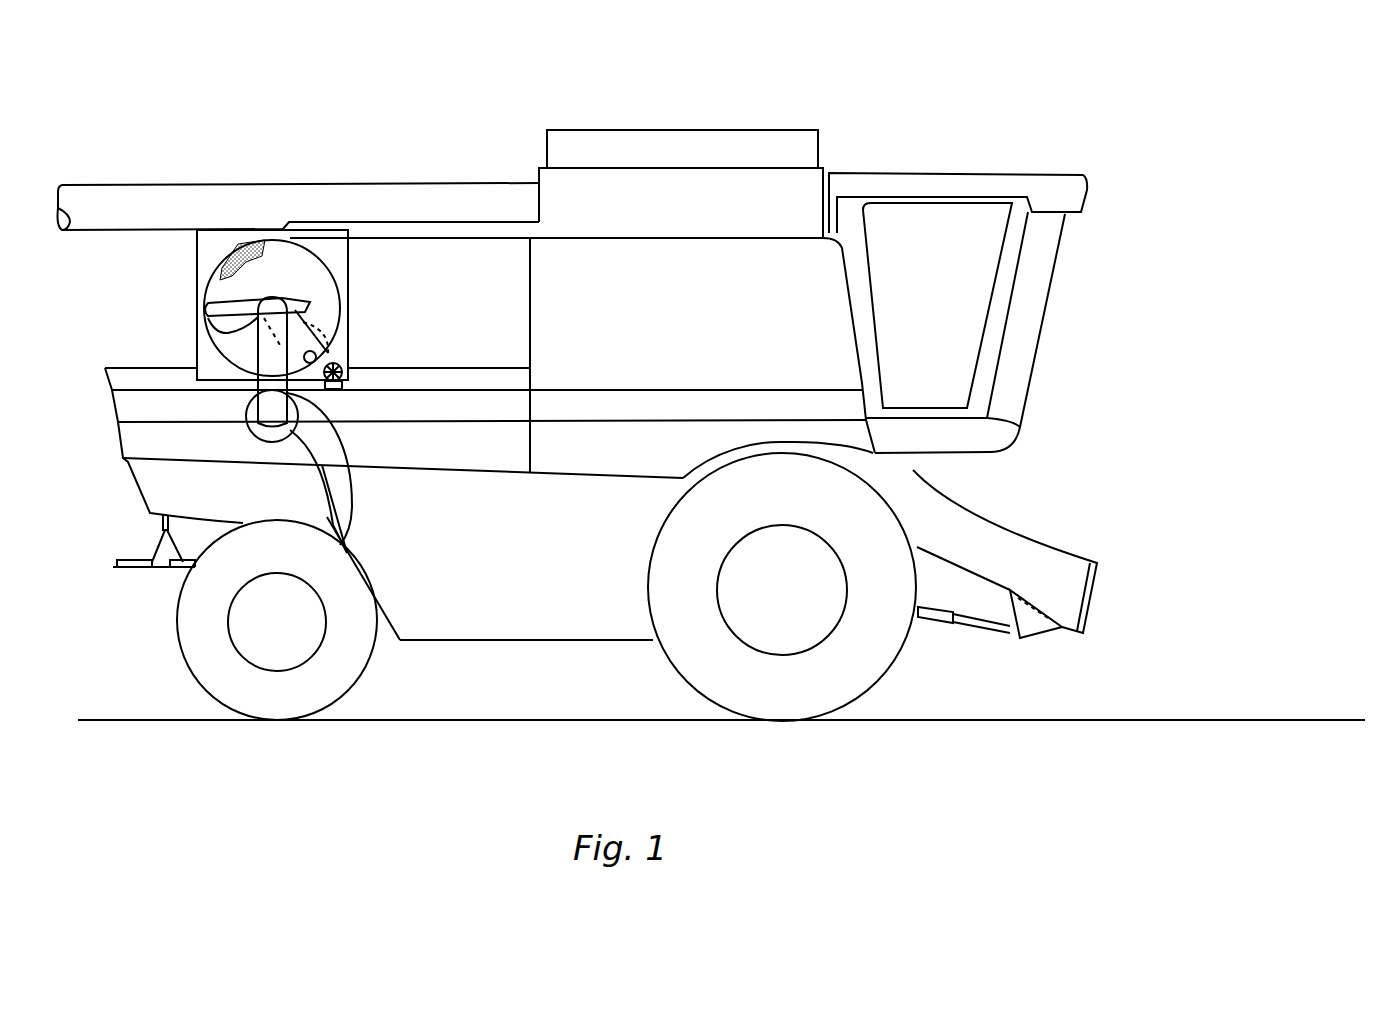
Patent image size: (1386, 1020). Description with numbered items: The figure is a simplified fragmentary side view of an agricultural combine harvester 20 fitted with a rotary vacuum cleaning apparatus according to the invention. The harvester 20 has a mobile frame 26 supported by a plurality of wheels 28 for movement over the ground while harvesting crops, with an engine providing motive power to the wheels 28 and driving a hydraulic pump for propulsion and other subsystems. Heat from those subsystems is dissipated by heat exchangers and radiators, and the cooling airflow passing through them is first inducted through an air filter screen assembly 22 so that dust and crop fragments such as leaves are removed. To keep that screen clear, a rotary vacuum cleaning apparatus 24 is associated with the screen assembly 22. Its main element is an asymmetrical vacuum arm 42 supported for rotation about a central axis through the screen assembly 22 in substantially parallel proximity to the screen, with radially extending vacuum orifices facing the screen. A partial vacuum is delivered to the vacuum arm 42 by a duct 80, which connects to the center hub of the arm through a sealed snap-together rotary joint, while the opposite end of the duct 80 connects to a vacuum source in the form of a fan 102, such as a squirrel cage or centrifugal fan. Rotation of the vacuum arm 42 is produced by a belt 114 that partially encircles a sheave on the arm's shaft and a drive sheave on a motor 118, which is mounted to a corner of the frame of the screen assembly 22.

The agricultural combine harvester 20 is at (1148, 115).
The air filter screen assembly 22 is at (322, 254).
The rotary vacuum cleaning apparatus 24 is at (228, 297).
The mobile frame 26 is at (576, 642).
The wheels 28 is at (368, 680).
The vacuum arm 42 is at (227, 333).
The duct 80 is at (247, 353).
The fan 102 is at (257, 436).
The belt 114 is at (313, 322).
The motor 118 is at (343, 364).